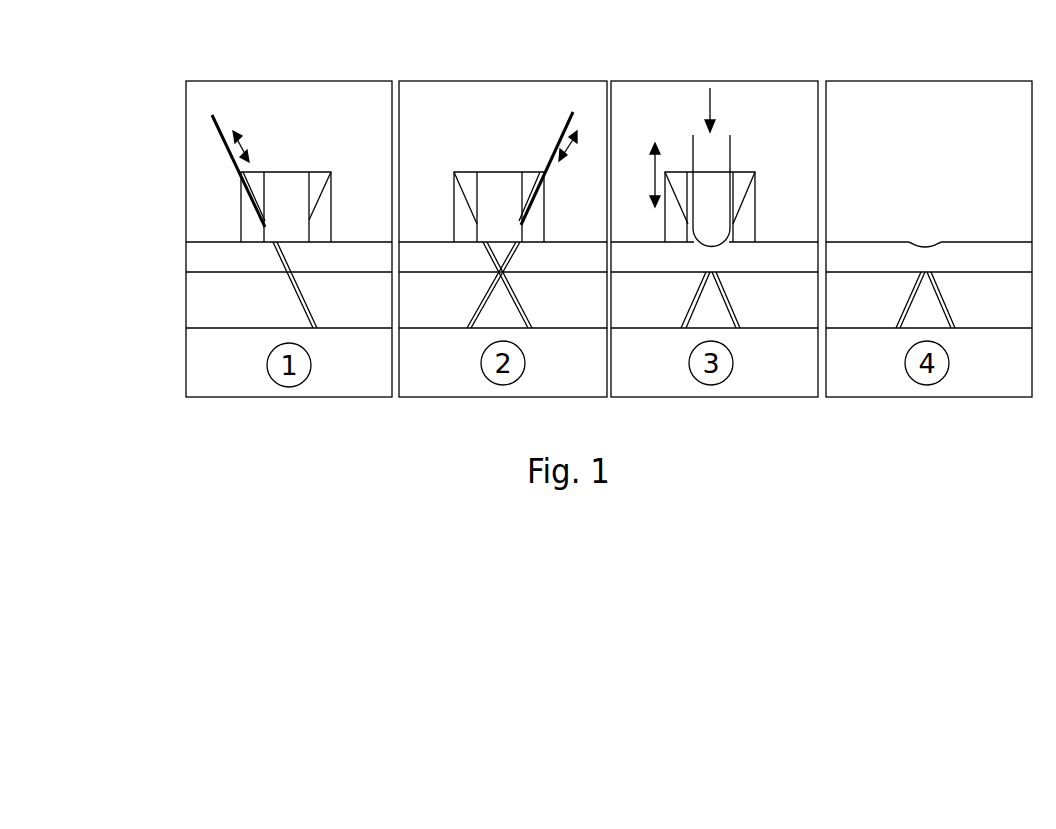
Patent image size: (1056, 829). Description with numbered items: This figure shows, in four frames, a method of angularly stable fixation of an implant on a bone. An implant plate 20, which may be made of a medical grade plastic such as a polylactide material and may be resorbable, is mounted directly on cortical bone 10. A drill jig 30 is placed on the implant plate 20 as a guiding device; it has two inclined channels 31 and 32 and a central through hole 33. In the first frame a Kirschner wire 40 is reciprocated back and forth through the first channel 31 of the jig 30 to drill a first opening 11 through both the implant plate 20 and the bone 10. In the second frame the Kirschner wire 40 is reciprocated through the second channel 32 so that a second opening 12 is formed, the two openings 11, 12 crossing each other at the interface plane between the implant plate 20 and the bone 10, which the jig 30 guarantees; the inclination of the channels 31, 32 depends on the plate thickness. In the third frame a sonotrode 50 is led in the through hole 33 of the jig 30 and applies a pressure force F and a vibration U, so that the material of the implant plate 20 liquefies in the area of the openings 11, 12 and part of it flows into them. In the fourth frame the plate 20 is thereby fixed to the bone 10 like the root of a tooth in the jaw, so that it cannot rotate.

The cortical bone 10 is at (198, 300).
The first opening 11 is at (520, 302).
The second opening 12 is at (481, 308).
The implant plate 20 is at (198, 254).
The drill jig 30 is at (287, 185).
The first channel 31 is at (467, 202).
The second channel 32 is at (752, 184).
The through hole 33 is at (500, 193).
The Kirschner wire 40 is at (220, 119).
The sonotrode 50 is at (702, 157).